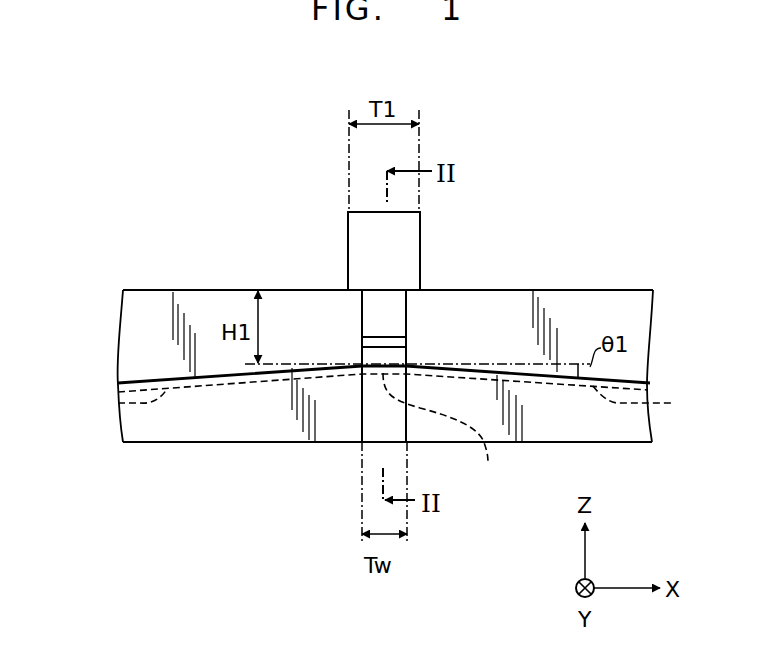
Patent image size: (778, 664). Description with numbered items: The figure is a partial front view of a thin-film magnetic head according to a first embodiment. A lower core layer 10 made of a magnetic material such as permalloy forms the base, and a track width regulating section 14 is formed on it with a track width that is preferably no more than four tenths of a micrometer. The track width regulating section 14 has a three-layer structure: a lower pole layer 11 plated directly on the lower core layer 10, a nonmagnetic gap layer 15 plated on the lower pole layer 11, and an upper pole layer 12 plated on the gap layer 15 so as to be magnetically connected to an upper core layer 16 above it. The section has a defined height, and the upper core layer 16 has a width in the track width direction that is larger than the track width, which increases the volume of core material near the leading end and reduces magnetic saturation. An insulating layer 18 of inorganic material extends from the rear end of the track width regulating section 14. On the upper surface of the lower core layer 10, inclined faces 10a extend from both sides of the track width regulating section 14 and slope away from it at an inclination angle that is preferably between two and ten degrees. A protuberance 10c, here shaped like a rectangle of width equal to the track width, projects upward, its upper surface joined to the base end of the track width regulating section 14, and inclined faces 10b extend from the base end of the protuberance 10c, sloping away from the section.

The lower core layer 10 is at (623, 427).
The inclined faces 10a is at (160, 379).
The inclined faces 10b is at (118, 403).
The protuberance 10c is at (446, 434).
The lower pole layer 11 is at (398, 362).
The upper pole layer 12 is at (398, 318).
The track width regulating section 14 is at (556, 233).
The gap layer 15 is at (398, 342).
The upper core layer 16 is at (348, 255).
The insulating layer 18 is at (148, 315).